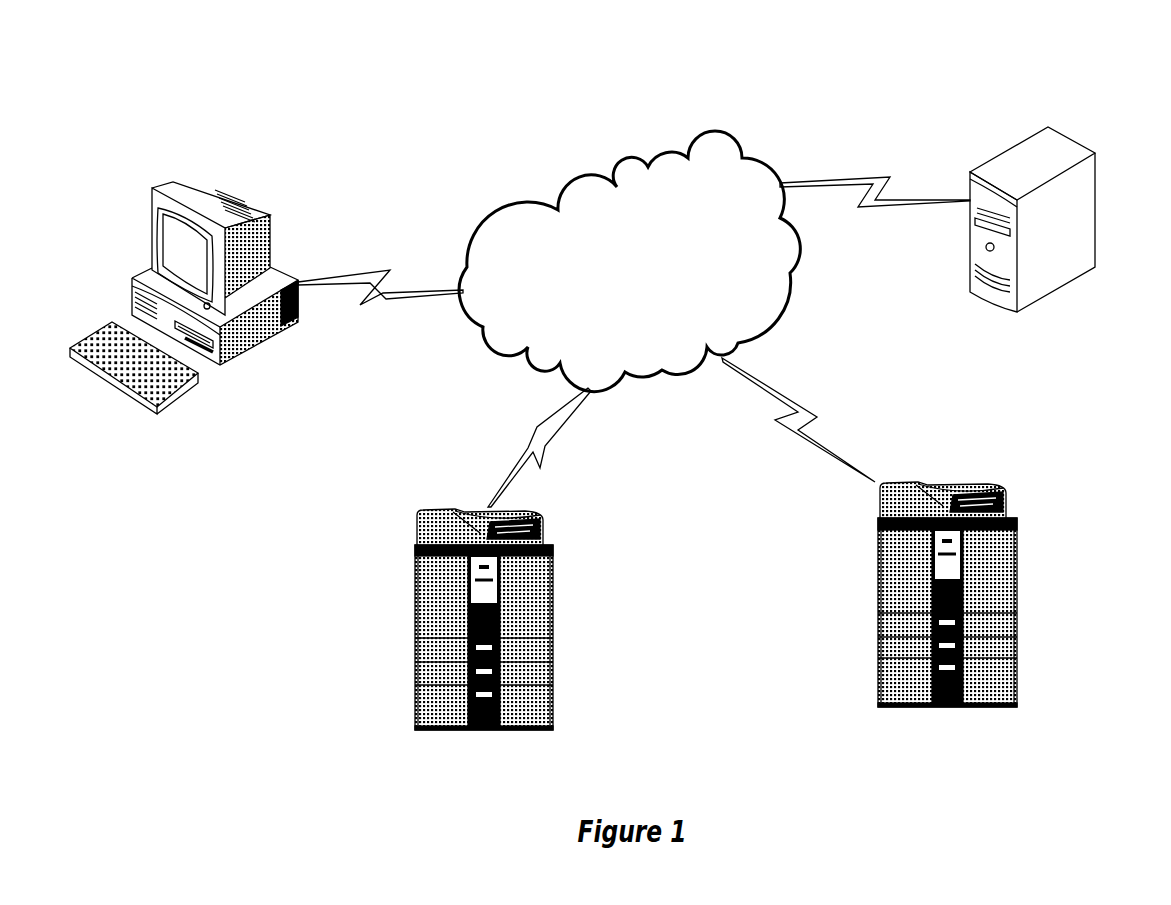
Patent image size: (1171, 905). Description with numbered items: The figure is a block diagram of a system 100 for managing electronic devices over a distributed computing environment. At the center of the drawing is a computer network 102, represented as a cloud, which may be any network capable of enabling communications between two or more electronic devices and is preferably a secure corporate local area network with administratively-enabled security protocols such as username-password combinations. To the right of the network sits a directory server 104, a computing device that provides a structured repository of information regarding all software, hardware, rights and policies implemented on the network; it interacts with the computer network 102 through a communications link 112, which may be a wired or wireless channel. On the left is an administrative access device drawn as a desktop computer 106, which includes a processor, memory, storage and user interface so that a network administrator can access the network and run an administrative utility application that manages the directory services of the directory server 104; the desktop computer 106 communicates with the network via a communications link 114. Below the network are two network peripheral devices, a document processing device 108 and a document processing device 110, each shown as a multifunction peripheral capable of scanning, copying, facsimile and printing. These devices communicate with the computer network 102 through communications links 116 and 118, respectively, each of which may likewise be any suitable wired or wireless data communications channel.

The system 100 is at (613, 62).
The computer network 102 is at (730, 133).
The directory server 104 is at (1096, 154).
The desktop computer 106 is at (153, 185).
The document processing device 108 is at (412, 543).
The document processing device 110 is at (1015, 517).
The communications link 112 is at (876, 170).
The communications link 114 is at (388, 270).
The communications link 116 is at (527, 443).
The communications link 118 is at (797, 400).